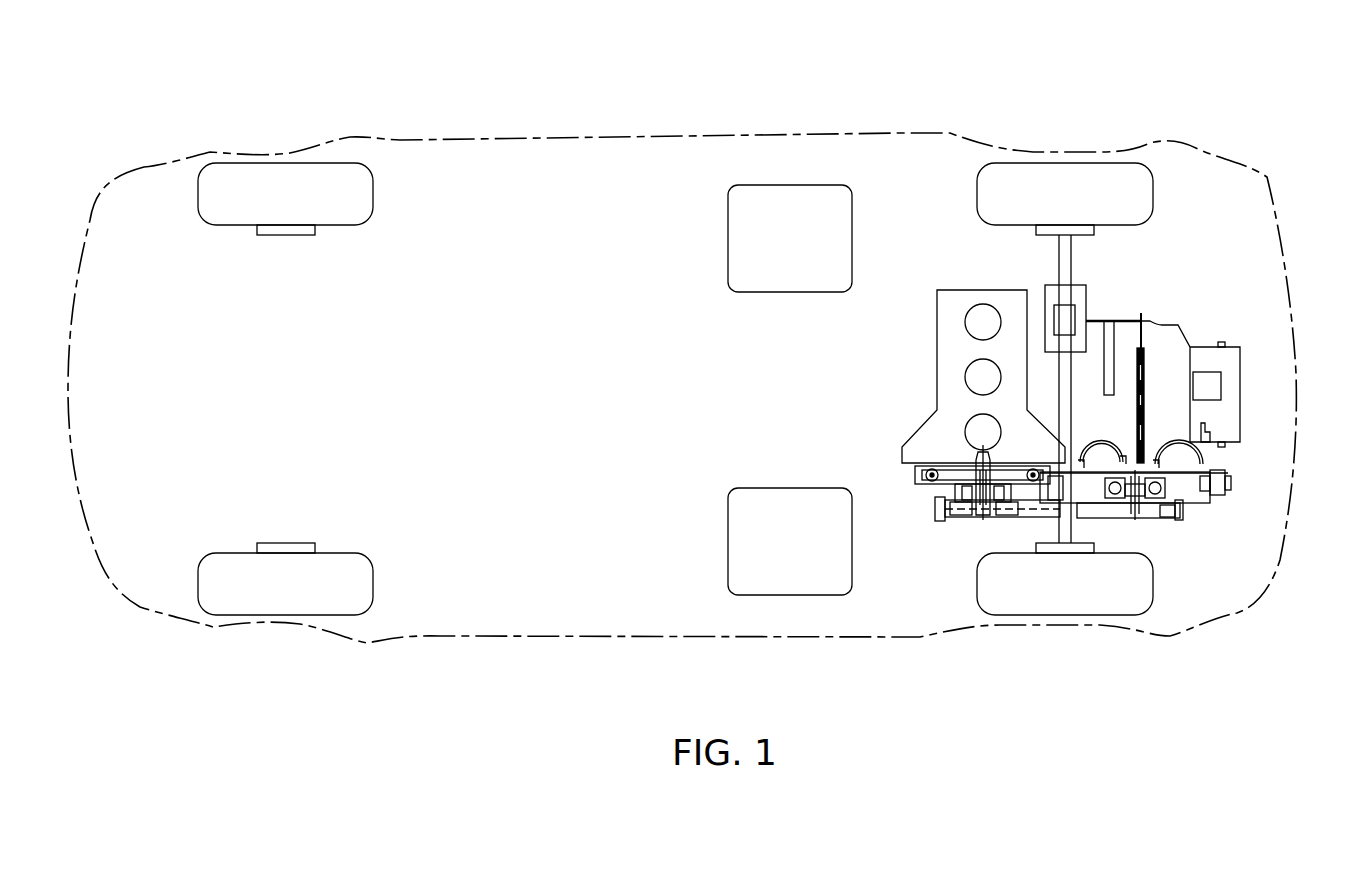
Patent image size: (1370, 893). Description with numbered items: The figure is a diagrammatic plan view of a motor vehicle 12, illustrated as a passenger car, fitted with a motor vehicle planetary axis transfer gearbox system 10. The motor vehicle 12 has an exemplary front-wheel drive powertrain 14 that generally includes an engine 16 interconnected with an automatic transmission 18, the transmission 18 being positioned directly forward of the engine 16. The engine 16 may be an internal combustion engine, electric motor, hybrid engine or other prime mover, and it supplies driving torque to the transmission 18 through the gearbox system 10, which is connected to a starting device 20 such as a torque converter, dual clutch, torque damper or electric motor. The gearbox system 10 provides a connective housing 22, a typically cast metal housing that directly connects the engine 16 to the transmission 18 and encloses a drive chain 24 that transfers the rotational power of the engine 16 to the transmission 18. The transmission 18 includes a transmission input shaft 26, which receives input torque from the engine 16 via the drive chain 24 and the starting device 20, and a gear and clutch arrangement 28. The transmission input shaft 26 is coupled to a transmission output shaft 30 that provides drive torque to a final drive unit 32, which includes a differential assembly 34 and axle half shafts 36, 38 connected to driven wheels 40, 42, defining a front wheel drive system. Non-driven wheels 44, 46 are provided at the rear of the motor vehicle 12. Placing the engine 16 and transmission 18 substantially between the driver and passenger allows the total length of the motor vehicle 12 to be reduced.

The motor vehicle planetary axis transfer gearbox system 10 is at (1198, 551).
The motor vehicle 12 is at (636, 141).
The powertrain 14 is at (1196, 256).
The engine 16 is at (948, 290).
The automatic transmission 18 is at (1230, 360).
The starting device 20 is at (1200, 466).
The connective housing 22 is at (1183, 503).
The drive chain 24 is at (1027, 512).
The transmission input shaft 26 is at (1150, 367).
The gear and clutch arrangement 28 is at (1215, 386).
The transmission output shaft 30 is at (1107, 326).
The final drive unit 32 is at (1045, 288).
The differential assembly 34 is at (1068, 312).
The axle half shaft 36 is at (1059, 248).
The axle half shaft 38 is at (1050, 540).
The driven wheel 40 is at (1065, 163).
The driven wheel 42 is at (1065, 615).
The non-driven wheel 44 is at (275, 163).
The non-driven wheel 46 is at (275, 615).